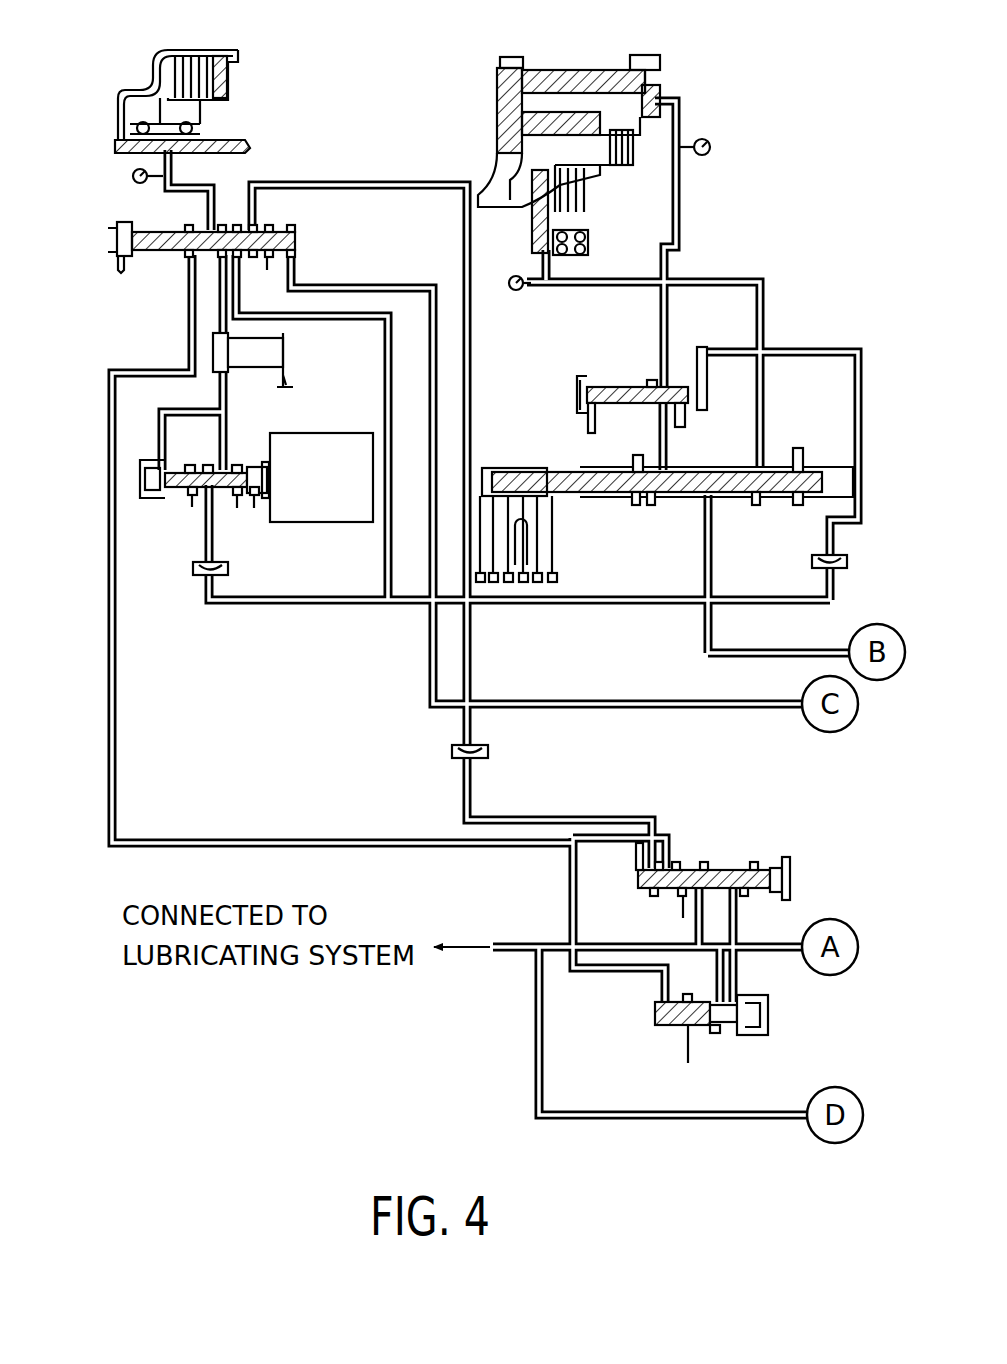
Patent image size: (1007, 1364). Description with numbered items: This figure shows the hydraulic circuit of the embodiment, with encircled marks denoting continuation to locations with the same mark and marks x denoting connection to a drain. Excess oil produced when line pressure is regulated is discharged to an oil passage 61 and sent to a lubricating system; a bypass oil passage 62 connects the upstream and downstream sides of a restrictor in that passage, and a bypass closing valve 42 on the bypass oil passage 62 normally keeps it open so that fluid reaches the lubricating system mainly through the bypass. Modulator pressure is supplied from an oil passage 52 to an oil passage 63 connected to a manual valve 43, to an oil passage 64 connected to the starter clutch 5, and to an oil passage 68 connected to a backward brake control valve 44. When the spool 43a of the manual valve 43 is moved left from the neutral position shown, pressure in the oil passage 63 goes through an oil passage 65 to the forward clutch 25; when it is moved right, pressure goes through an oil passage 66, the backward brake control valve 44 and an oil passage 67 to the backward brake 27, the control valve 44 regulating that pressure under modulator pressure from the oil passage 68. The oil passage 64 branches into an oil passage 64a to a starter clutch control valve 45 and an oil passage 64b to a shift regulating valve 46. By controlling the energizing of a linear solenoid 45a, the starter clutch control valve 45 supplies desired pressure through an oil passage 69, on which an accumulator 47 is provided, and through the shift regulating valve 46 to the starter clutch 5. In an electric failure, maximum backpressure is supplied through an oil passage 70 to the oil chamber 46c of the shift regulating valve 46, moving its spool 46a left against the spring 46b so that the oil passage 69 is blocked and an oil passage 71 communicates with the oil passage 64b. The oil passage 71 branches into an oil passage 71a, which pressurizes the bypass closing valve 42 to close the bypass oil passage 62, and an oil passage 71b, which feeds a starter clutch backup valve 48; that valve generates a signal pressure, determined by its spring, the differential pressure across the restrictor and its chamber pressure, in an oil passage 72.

The starter clutch 5 is at (262, 78).
The backward brake 27 is at (686, 74).
The forward clutch 25 is at (603, 235).
The oil passage 71 is at (372, 182).
The oil passage 71a is at (570, 888).
The oil passage 71b is at (632, 817).
The oil passage 70 is at (632, 700).
The oil passage 72 is at (265, 840).
The oil passage 69 is at (232, 403).
The oil passage 64 is at (642, 592).
The oil passage 64a is at (272, 607).
The oil passage 64b is at (381, 530).
The oil passage 65 is at (762, 300).
The oil passage 66 is at (660, 434).
The oil passage 67 is at (690, 200).
The oil passage 68 is at (778, 592).
The oil passage 63 is at (712, 588).
The oil passage 52 is at (802, 638).
The oil passage 61 is at (778, 950).
The shift regulating valve 46 is at (148, 278).
The spool 46a is at (293, 230).
The spring 46b is at (142, 224).
The oil chamber 46c is at (294, 254).
The accumulator 47 is at (287, 340).
The starter clutch control valve 45 is at (162, 508).
The linear solenoid 45a is at (298, 515).
The backward brake control valve 44 is at (614, 365).
The manual valve 43 is at (565, 458).
The spool 43a is at (813, 460).
The starter clutch backup valve 48 is at (745, 850).
The bypass oil passage 62 is at (712, 992).
The bypass closing valve 42 is at (722, 1052).